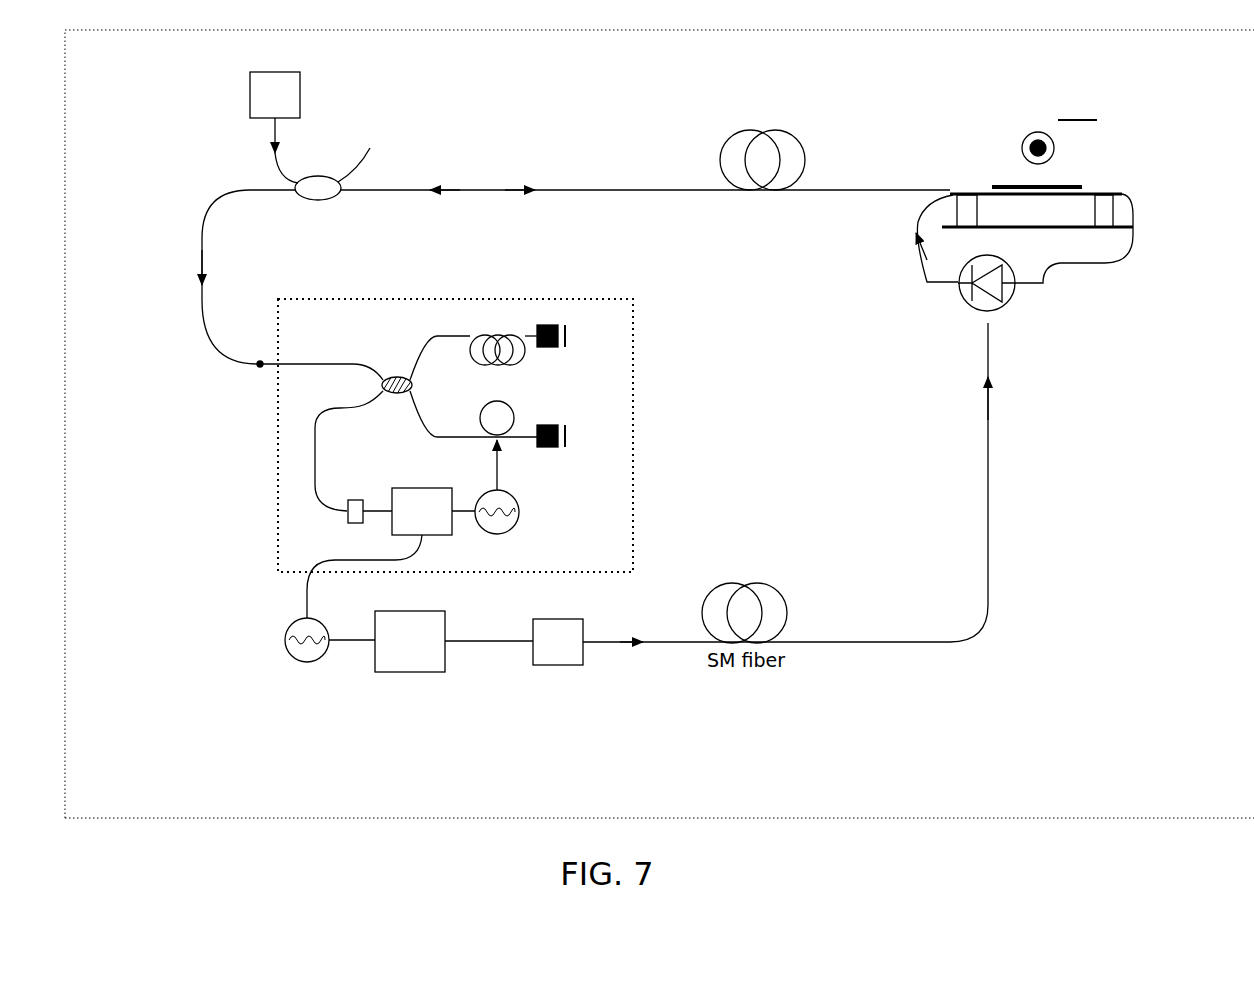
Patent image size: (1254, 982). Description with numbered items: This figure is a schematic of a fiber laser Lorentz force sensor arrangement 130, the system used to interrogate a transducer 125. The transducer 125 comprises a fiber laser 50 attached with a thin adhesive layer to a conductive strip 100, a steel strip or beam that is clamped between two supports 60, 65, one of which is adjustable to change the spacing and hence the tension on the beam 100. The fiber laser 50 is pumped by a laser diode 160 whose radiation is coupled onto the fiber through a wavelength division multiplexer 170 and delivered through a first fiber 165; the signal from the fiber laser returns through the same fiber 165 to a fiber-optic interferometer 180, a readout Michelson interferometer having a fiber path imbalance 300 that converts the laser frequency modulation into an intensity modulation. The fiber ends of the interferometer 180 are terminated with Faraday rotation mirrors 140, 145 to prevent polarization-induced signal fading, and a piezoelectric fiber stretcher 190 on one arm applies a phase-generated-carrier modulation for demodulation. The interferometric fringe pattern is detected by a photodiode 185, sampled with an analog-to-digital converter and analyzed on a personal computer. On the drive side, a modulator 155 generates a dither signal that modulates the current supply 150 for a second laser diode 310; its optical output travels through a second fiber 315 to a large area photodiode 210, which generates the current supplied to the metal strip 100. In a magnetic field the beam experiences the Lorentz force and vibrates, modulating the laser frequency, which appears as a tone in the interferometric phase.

The fiber laser 50 is at (1010, 182).
The support 60 is at (1105, 210).
The support 65 is at (970, 210).
The conductive strip 100 is at (1047, 198).
The transducer 125 is at (1031, 227).
The fiber laser Lorentz force sensor arrangement 130 is at (1002, 820).
The Faraday rotation mirror 140 is at (572, 343).
The Faraday rotation mirror 145 is at (583, 435).
The current supply 150 is at (390, 672).
The modulator 155 is at (285, 665).
The laser diode 160 is at (235, 97).
The first fiber 165 is at (808, 118).
The wavelength division multiplexer 170 is at (295, 185).
The fiber-optic interferometer 180 is at (626, 458).
The photodiode 185 is at (345, 525).
The piezoelectric fiber stretcher 190 is at (525, 415).
The large area photodiode 210 is at (1020, 323).
The fiber path imbalance 300 is at (472, 348).
The second laser diode 310 is at (560, 672).
The second fiber 315 is at (803, 598).